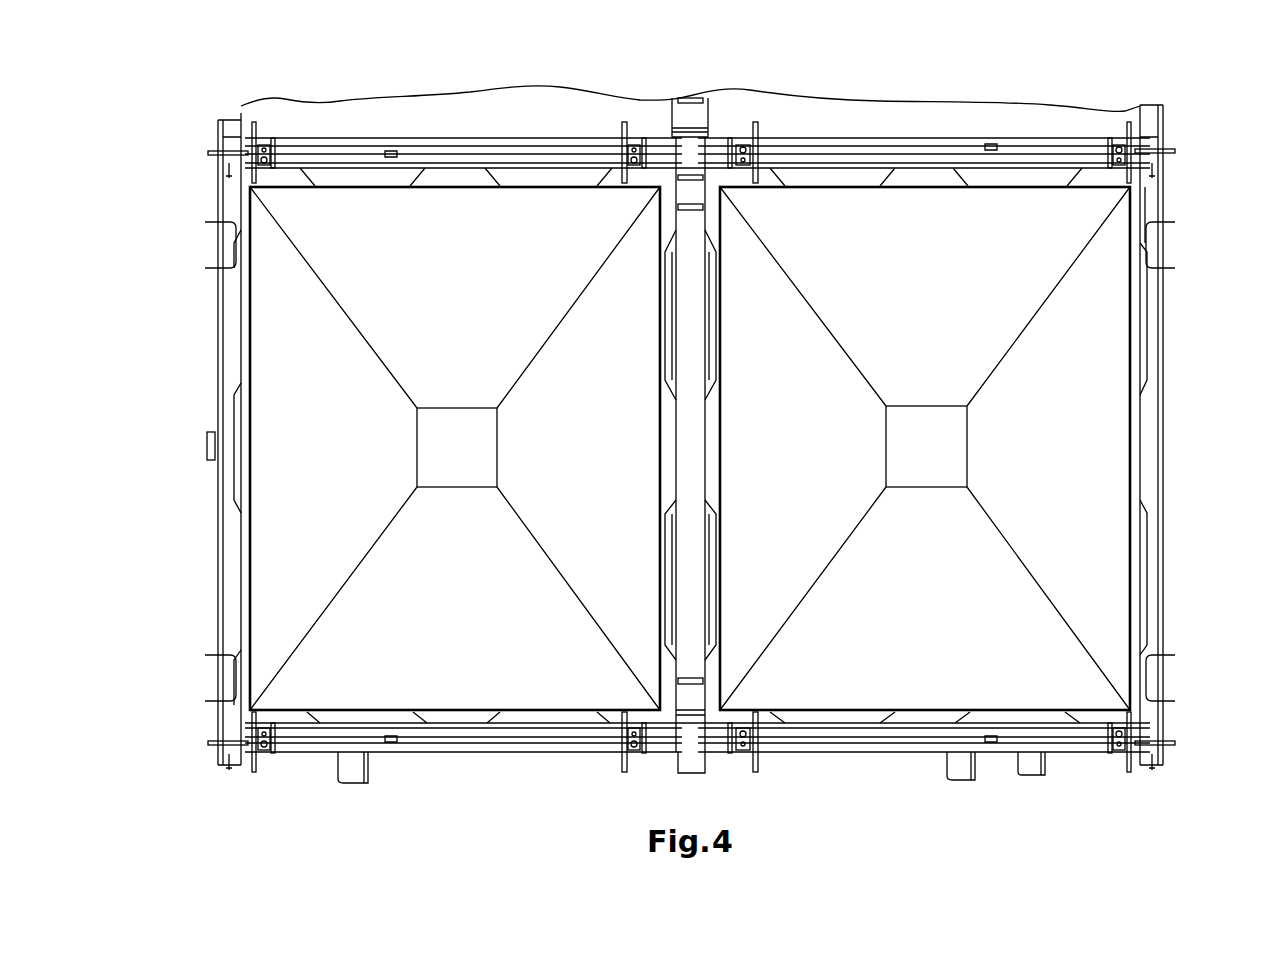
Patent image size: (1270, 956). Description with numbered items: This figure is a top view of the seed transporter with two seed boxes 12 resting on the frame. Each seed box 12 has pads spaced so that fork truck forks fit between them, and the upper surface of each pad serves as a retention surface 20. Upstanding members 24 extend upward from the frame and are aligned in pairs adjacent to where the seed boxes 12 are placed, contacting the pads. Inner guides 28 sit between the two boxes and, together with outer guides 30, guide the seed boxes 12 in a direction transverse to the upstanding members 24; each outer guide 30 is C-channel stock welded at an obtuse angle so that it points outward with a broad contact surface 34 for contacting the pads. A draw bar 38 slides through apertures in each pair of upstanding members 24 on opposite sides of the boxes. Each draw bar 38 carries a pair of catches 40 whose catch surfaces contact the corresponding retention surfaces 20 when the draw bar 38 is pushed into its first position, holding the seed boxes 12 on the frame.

The seed box 12 is at (462, 205).
The retention surface 20 is at (283, 172).
The upstanding member 24 is at (643, 150).
The inner guide 28 is at (688, 210).
The outer guide 30 is at (222, 248).
The broad contact surface 34 is at (1147, 268).
The draw bar 38 is at (930, 150).
The catch 40 is at (252, 124).